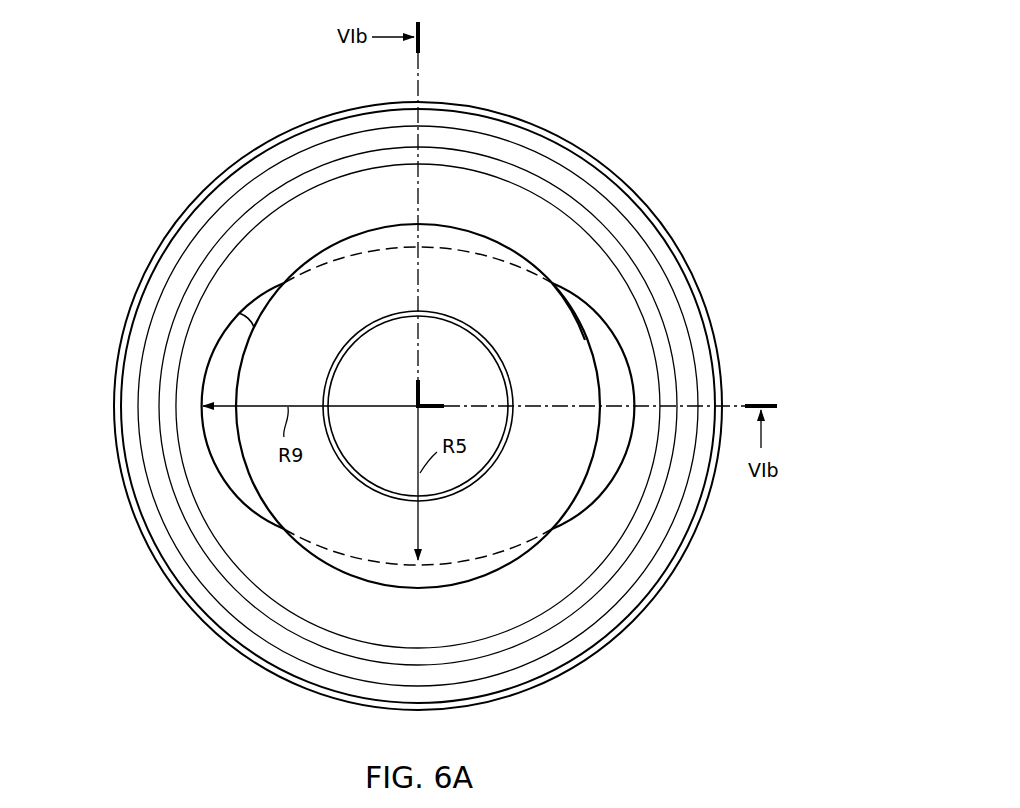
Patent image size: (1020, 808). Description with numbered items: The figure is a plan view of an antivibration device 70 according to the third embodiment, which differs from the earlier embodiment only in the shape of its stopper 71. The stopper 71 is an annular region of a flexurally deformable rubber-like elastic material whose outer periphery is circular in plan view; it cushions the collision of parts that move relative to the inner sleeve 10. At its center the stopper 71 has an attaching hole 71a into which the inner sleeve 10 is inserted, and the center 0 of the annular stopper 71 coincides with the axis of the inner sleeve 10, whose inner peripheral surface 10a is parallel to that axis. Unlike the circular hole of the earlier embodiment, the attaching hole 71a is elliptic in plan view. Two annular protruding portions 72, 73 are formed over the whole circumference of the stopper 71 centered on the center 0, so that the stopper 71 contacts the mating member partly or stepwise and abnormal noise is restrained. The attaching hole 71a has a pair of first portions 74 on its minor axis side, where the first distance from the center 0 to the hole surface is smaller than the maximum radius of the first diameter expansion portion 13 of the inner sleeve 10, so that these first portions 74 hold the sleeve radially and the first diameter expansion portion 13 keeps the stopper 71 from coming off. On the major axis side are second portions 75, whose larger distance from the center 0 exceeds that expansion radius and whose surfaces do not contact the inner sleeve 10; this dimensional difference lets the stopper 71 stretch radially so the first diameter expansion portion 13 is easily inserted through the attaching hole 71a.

The antivibration device 70 is at (466, 363).
The stopper 71 is at (467, 355).
The attaching hole 71a is at (256, 327).
The protruding portion 72 is at (203, 278).
The protruding portion 73 is at (240, 176).
The first portions 74 is at (432, 193).
The second portions 75 is at (643, 447).
The inner sleeve 10 is at (442, 363).
The inner peripheral surface 10a is at (350, 463).
The first diameter expansion portion 13 is at (557, 318).
The center 0 is at (422, 402).